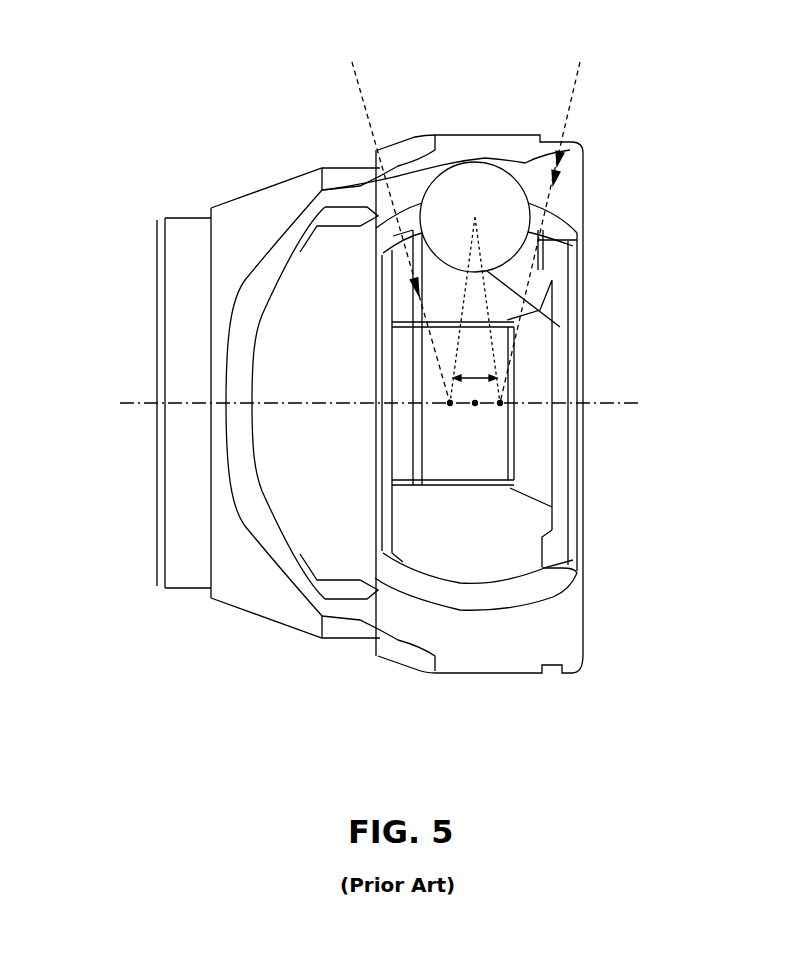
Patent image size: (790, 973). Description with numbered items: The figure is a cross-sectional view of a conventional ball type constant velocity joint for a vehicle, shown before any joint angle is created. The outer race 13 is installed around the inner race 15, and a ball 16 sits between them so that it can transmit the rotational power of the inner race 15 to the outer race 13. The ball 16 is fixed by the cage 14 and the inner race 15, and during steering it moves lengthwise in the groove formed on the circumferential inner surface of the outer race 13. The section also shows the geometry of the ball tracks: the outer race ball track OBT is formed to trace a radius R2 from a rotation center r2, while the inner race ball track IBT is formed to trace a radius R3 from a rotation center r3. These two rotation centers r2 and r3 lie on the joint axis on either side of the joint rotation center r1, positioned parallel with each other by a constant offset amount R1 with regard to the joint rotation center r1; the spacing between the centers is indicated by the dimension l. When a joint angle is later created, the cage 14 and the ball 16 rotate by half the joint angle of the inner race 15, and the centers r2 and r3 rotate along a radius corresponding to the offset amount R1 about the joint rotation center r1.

The outer race 13 is at (255, 203).
The cage 14 is at (558, 227).
The inner race 15 is at (523, 272).
The ball 16 is at (498, 190).
The offset amount R1 is at (495, 407).
The radius of outer race ball track R2 is at (520, 273).
The radius of inner race ball track R3 is at (437, 350).
The joint rotation center r1 is at (475, 403).
The rotation center of outer race ball track r2 is at (500, 403).
The rotation center of inner race ball track r3 is at (450, 403).
The inner race ball track IBT is at (391, 217).
The outer race ball track OBT is at (550, 217).
The offset l is at (475, 310).